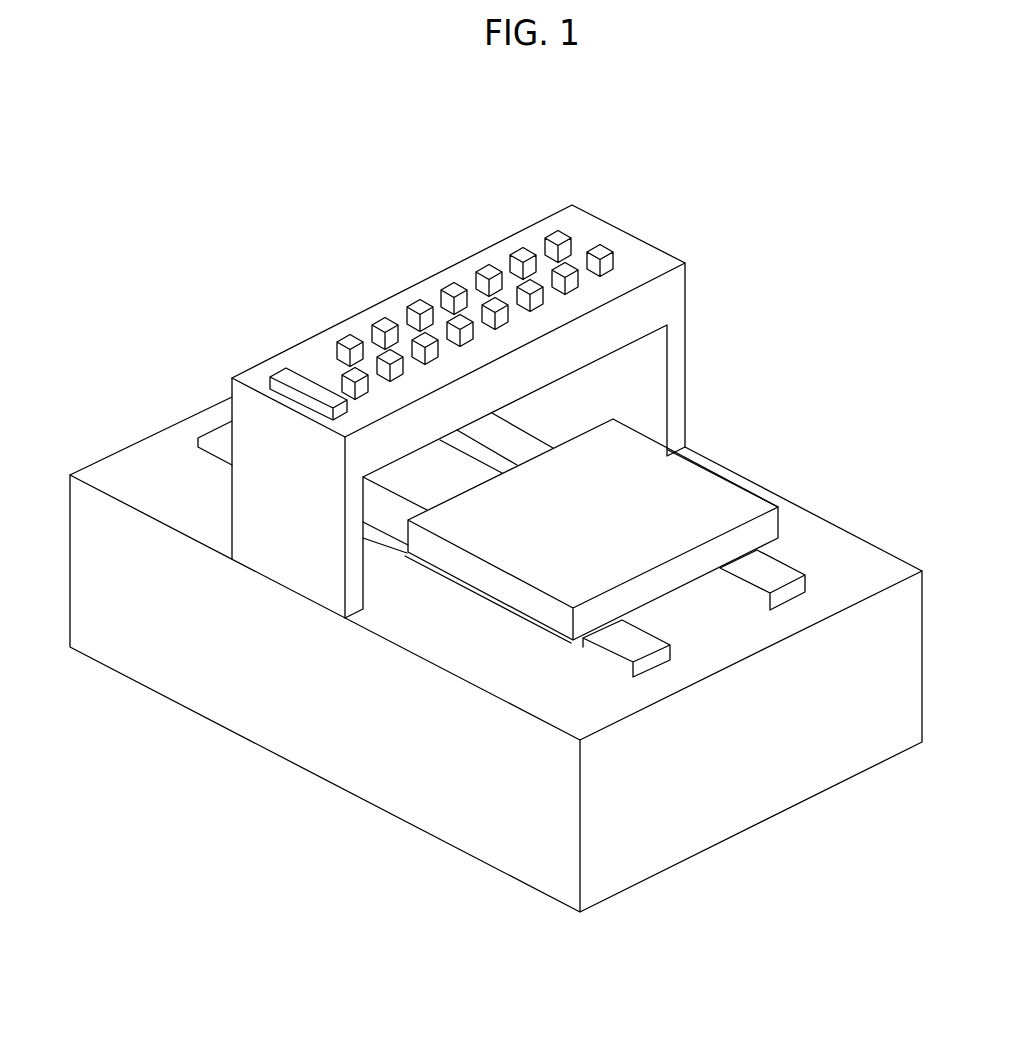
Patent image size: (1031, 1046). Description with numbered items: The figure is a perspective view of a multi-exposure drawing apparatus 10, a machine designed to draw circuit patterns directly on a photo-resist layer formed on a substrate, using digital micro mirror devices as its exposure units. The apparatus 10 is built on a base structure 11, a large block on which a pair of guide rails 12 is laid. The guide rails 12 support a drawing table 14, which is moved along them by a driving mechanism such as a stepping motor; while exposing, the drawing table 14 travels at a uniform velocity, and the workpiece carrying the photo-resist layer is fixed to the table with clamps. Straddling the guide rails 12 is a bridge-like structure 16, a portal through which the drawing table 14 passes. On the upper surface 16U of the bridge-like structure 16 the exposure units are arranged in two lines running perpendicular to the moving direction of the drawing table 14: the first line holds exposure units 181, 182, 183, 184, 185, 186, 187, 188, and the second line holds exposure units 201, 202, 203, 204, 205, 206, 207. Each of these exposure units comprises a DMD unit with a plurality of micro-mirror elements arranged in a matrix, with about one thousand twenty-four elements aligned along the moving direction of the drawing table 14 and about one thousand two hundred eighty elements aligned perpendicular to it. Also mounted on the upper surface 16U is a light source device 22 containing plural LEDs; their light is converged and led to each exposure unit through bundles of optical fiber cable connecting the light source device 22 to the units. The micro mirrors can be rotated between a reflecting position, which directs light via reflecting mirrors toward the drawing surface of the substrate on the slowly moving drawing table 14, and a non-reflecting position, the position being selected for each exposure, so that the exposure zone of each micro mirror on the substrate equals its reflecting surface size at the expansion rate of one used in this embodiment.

The multi-exposure drawing apparatus 10 is at (888, 448).
The base structure 11 is at (863, 551).
The guide rails 12 is at (772, 580).
The drawing table 14 is at (700, 500).
The bridge-like structure 16 is at (688, 356).
The upper surface 16U is at (623, 246).
The light source device 22 is at (264, 374).
The exposure unit 181 is at (370, 394).
The exposure unit 182 is at (405, 376).
The exposure unit 183 is at (440, 359).
The exposure unit 184 is at (475, 341).
The exposure unit 185 is at (510, 324).
The exposure unit 186 is at (545, 306).
The exposure unit 187 is at (580, 289).
The exposure unit 188 is at (613, 272).
The exposure unit 201 is at (346, 338).
The exposure unit 202 is at (381, 320).
The exposure unit 203 is at (417, 302).
The exposure unit 204 is at (450, 285).
The exposure unit 205 is at (486, 269).
The exposure unit 206 is at (519, 251).
The exposure unit 207 is at (556, 241).